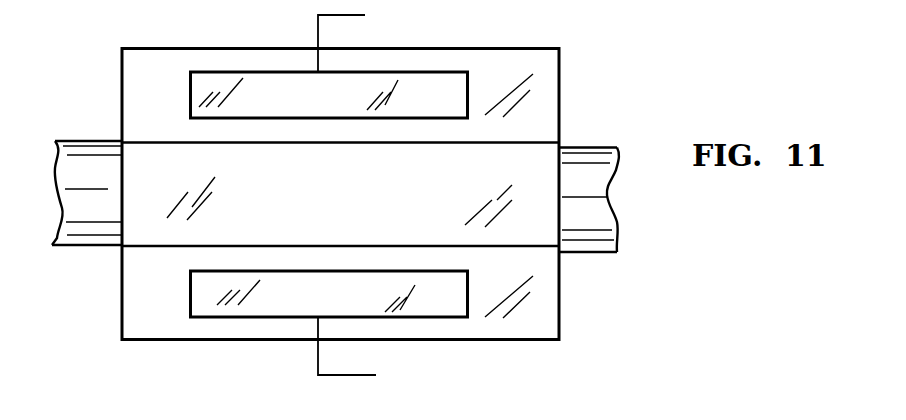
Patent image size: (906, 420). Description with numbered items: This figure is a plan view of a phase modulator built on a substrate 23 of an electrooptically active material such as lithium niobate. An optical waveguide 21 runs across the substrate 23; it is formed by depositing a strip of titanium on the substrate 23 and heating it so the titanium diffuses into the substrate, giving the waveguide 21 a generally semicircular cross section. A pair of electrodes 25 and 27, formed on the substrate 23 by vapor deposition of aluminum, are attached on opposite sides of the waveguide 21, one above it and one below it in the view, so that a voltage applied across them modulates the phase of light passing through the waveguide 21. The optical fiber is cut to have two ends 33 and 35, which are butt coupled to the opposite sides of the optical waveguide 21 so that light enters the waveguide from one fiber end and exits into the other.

The optical waveguide 21 is at (138, 142).
The substrate 23 is at (559, 283).
The electrode 25 is at (420, 318).
The electrode 27 is at (467, 86).
The fiber end 33 is at (123, 230).
The fiber end 35 is at (562, 153).